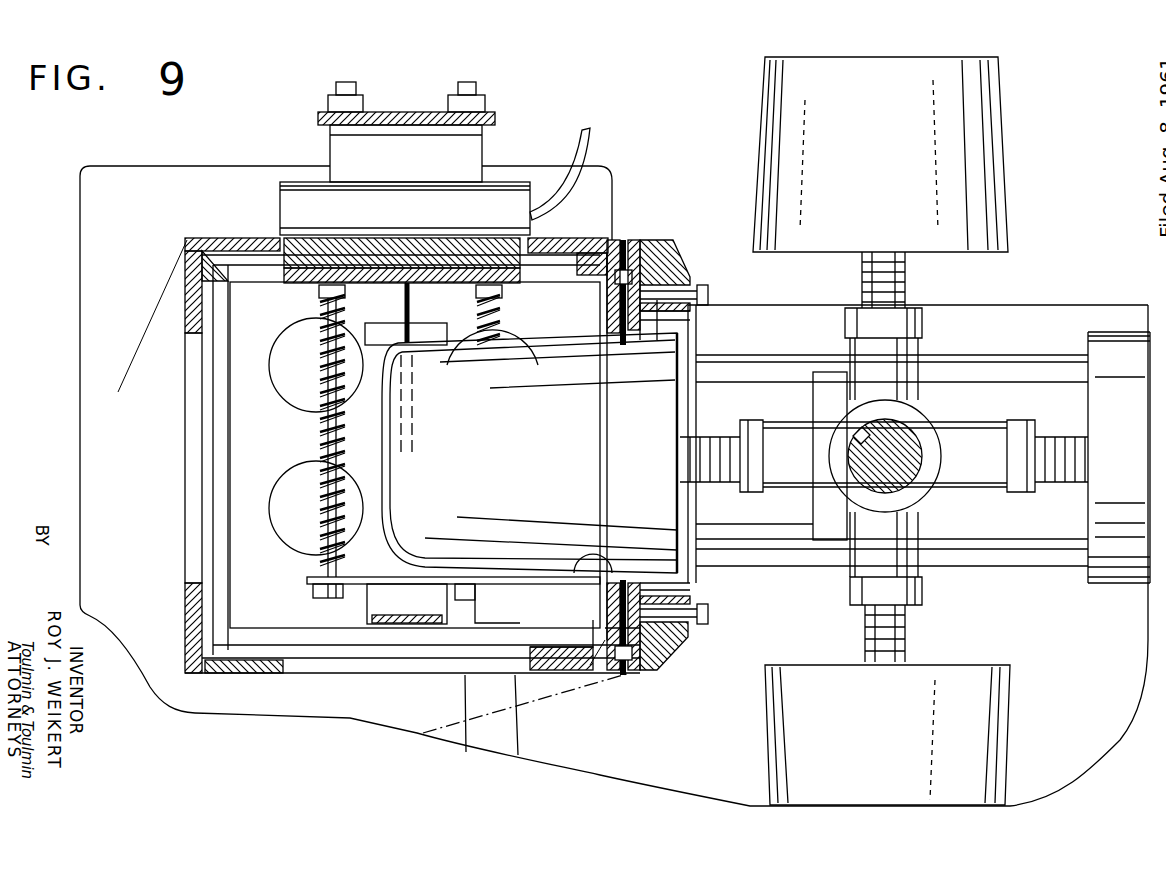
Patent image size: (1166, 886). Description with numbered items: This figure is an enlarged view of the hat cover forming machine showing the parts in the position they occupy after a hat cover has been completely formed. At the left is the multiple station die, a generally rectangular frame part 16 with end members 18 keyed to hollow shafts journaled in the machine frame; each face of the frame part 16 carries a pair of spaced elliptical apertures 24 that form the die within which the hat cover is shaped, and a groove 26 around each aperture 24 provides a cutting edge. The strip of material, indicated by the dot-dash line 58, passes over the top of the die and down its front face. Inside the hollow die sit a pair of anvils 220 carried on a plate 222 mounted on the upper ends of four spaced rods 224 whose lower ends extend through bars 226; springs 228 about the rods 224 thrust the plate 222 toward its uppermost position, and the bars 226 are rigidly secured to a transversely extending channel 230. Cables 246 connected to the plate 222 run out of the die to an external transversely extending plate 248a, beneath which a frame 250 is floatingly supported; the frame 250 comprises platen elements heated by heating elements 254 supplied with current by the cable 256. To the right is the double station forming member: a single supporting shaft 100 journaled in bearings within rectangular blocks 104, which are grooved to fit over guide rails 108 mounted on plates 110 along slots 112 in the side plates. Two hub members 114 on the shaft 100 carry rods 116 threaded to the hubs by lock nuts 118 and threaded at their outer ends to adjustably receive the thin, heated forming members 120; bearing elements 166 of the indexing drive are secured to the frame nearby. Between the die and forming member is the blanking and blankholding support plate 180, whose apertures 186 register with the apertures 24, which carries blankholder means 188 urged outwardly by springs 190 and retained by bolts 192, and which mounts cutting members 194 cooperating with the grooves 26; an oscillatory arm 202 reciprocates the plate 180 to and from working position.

The rectangular frame part 16 is at (224, 238).
The end members 18 is at (230, 442).
The elliptical apertures 24 is at (570, 580).
The groove 26 is at (603, 667).
The strip of material 58 is at (142, 324).
The supporting shaft 100 is at (913, 427).
The rectangular blocks 104 is at (985, 510).
The guide rails 108 is at (1003, 375).
The plates 110 is at (733, 557).
The slots 112 is at (782, 522).
The hub members 114 is at (870, 363).
The rods 116 is at (703, 450).
The lock nuts 118 is at (920, 307).
The forming members 120 is at (985, 215).
The bearing elements 166 is at (687, 522).
The support plate 180 is at (670, 262).
The apertures 186 is at (693, 595).
The blankholder means 188 is at (673, 660).
The springs 190 is at (640, 240).
The bolts 192 is at (687, 282).
The cutting members 194 is at (640, 672).
The oscillatory arm 202 is at (467, 700).
The anvils 220 is at (513, 247).
The plate 222 is at (513, 262).
The rods 224 is at (335, 325).
The bars 226 is at (313, 596).
The springs 228 is at (318, 450).
The channel 230 is at (370, 610).
The cables 246 is at (400, 345).
The plate 248a is at (495, 110).
The frame 250 is at (463, 158).
The heating elements 254 is at (507, 194).
The cable 256 is at (593, 144).